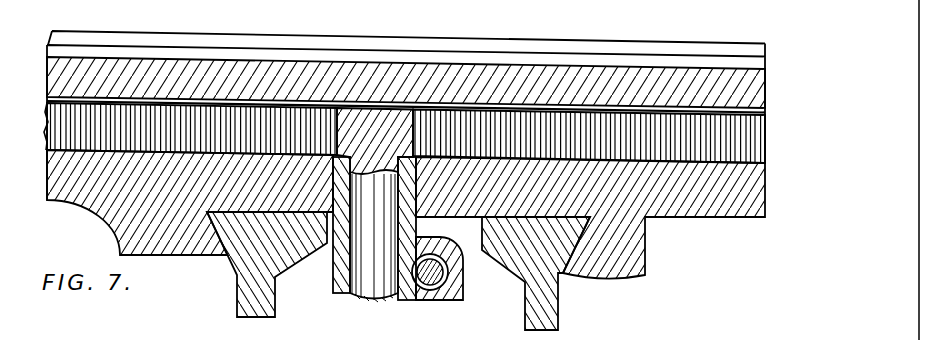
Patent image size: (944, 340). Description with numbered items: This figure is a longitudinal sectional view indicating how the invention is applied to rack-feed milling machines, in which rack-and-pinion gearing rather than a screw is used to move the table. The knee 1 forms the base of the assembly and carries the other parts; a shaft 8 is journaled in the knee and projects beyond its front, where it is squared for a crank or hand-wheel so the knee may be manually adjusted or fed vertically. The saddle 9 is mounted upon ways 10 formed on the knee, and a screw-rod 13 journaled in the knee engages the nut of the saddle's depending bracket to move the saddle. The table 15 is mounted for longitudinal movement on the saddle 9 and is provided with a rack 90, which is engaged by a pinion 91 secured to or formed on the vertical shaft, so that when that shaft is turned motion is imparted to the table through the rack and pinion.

The knee 1 is at (548, 313).
The shaft 8 is at (350, 298).
The saddle 9 is at (167, 254).
The ways 10 is at (227, 236).
The screw-rod 13 is at (447, 277).
The table 15 is at (400, 74).
The rack 90 is at (748, 141).
The pinion 91 is at (402, 126).